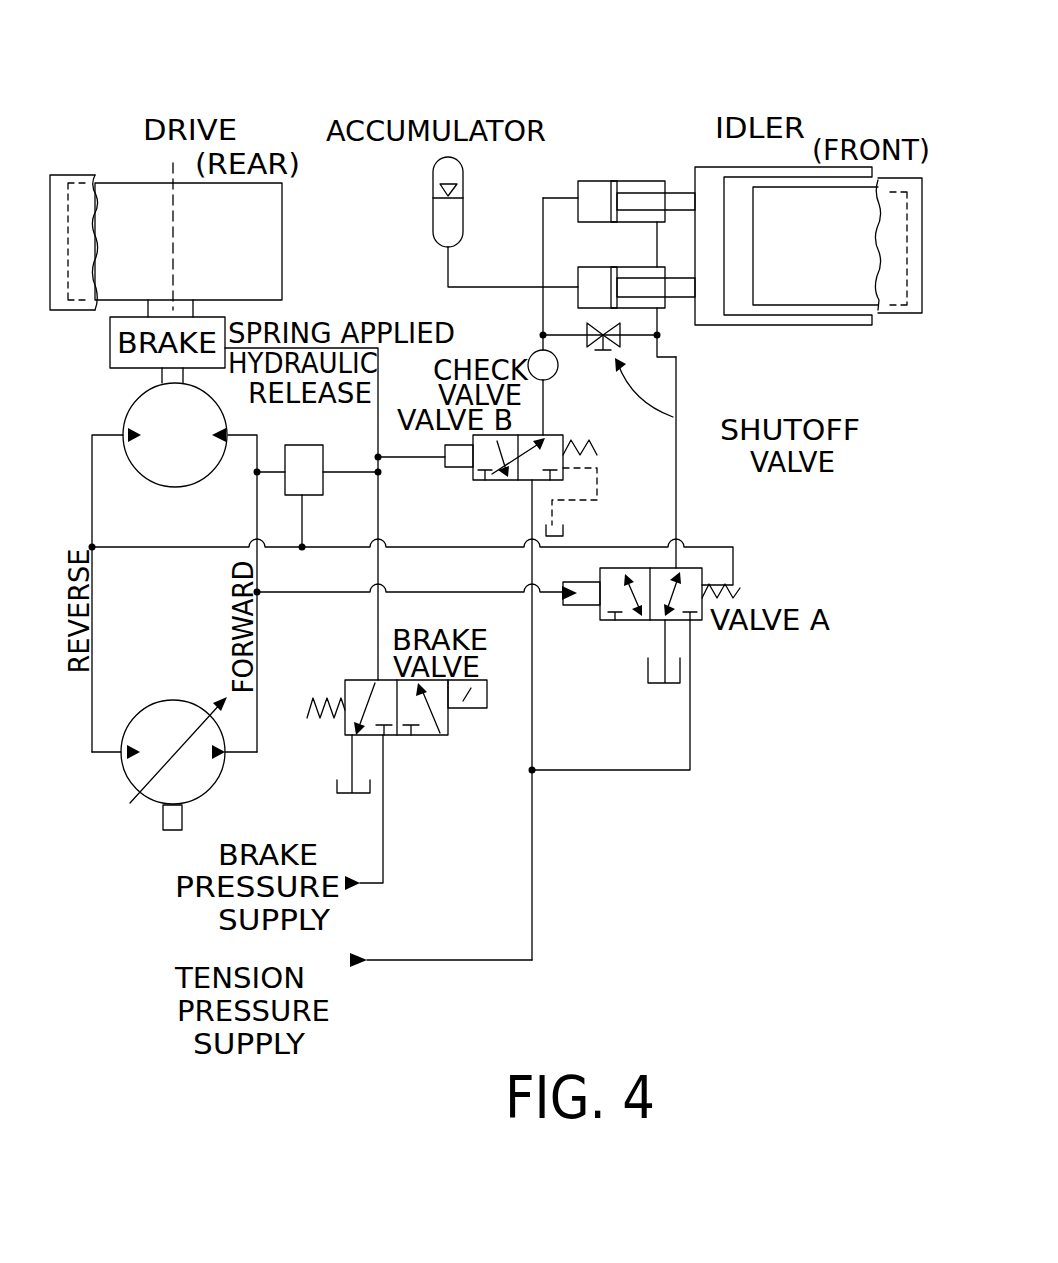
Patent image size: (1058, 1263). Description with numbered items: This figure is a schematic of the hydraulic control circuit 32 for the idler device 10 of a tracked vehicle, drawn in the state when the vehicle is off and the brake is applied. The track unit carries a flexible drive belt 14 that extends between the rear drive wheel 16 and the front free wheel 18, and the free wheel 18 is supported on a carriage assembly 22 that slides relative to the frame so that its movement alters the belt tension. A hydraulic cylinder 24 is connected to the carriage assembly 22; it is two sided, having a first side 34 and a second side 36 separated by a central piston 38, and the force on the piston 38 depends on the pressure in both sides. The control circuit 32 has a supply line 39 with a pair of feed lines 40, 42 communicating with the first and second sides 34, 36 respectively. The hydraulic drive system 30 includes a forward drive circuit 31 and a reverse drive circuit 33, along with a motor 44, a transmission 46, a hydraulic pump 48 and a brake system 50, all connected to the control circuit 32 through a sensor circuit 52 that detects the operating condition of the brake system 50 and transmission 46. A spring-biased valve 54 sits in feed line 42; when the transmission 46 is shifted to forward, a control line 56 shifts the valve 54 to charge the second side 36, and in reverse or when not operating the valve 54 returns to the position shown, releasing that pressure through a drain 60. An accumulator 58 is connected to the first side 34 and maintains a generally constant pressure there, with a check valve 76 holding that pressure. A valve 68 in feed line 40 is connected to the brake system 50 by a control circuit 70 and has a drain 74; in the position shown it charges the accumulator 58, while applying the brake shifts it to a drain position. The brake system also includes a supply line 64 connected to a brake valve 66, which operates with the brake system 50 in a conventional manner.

The idler device 10 is at (718, 110).
The flexible drive belt 14 is at (65, 312).
The rear drive wheel 16 is at (188, 240).
The front free wheel 18 is at (837, 245).
The carriage assembly 22 is at (738, 325).
The hydraulic cylinder 24 is at (612, 181).
The hydraulic drive system 30 is at (270, 741).
The forward drive circuit 31 is at (255, 690).
The hydraulic control circuit 32 is at (648, 900).
The reverse drive circuit 33 is at (92, 718).
The first chamber or side 34 is at (590, 192).
The second chamber or side 36 is at (647, 187).
The central piston 38 is at (617, 190).
The supply line 39 is at (428, 962).
The feed line 40 is at (533, 707).
The feed line 42 is at (690, 742).
The motor 44 is at (196, 480).
The transmission 46 is at (176, 620).
The hydraulic pump 48 is at (196, 799).
The brake system 50 is at (120, 373).
The sensor circuit 52 is at (318, 489).
The valve 54 is at (712, 588).
The control line 56 is at (485, 593).
The accumulator 58 is at (466, 185).
The drain 60 is at (650, 683).
The supply line 64 is at (383, 833).
The brake valve 66 is at (357, 678).
The valve 68 is at (498, 482).
The control circuit 70 is at (380, 458).
The drain 74 is at (600, 493).
The check valve 76 is at (530, 352).